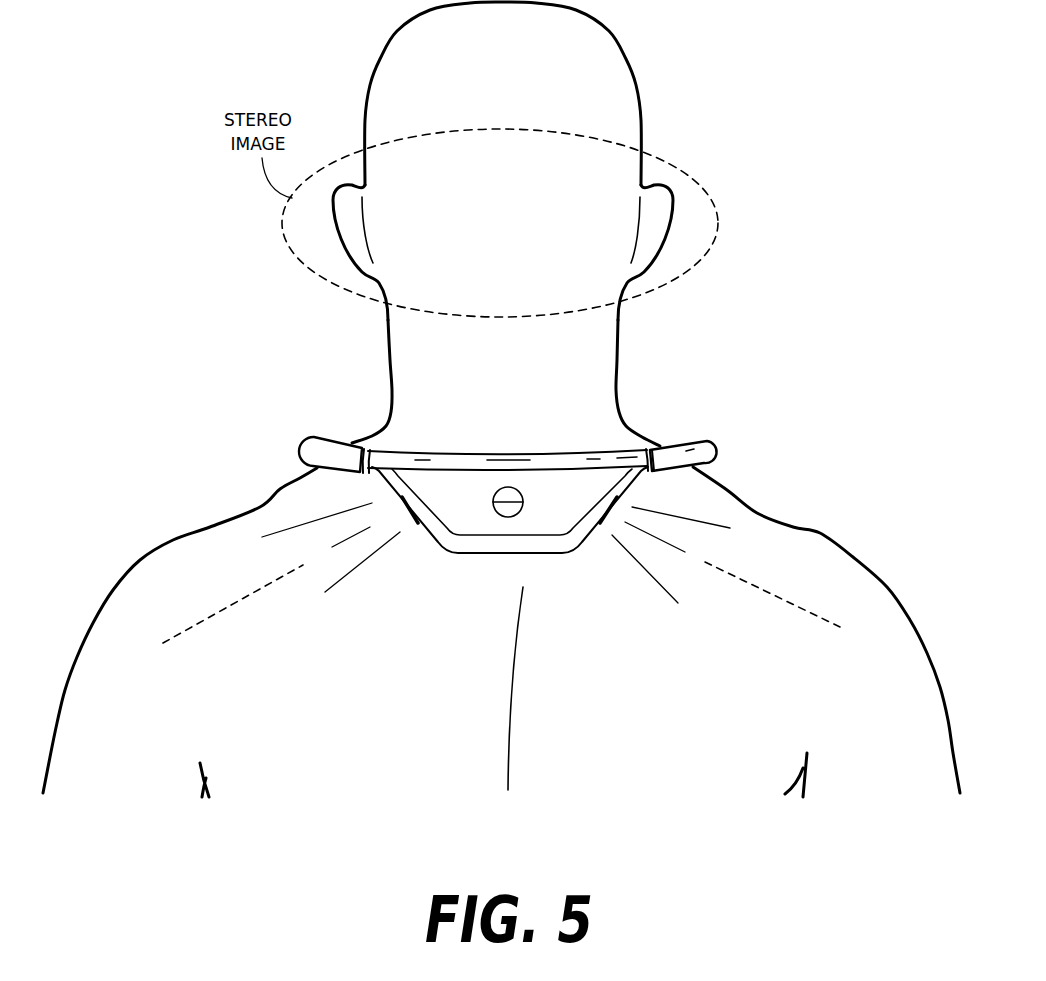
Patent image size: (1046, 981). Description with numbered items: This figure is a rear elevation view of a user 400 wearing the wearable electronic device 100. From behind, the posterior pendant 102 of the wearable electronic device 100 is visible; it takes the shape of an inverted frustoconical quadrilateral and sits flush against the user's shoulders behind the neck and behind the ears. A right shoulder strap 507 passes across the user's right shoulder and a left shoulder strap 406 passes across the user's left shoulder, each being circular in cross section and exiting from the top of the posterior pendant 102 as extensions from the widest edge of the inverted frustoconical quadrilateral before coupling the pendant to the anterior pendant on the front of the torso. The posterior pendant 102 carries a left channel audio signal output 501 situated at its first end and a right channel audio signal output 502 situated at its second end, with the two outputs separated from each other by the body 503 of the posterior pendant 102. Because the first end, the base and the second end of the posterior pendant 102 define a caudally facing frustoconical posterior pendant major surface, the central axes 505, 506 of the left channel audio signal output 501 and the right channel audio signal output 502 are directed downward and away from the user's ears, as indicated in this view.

The wearable electronic device 100 is at (531, 486).
The posterior pendant 102 is at (510, 502).
The user 400 is at (210, 527).
The left shoulder strap 406 is at (338, 452).
The right shoulder strap 507 is at (715, 448).
The body 503 is at (453, 497).
The left channel audio signal output 501 is at (396, 557).
The right channel audio signal output 502 is at (614, 567).
The central axis 505 is at (220, 612).
The central axis 506 is at (782, 598).